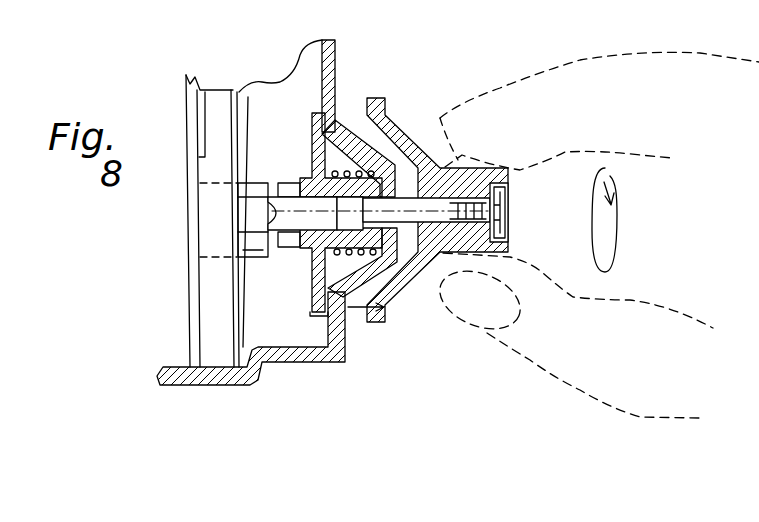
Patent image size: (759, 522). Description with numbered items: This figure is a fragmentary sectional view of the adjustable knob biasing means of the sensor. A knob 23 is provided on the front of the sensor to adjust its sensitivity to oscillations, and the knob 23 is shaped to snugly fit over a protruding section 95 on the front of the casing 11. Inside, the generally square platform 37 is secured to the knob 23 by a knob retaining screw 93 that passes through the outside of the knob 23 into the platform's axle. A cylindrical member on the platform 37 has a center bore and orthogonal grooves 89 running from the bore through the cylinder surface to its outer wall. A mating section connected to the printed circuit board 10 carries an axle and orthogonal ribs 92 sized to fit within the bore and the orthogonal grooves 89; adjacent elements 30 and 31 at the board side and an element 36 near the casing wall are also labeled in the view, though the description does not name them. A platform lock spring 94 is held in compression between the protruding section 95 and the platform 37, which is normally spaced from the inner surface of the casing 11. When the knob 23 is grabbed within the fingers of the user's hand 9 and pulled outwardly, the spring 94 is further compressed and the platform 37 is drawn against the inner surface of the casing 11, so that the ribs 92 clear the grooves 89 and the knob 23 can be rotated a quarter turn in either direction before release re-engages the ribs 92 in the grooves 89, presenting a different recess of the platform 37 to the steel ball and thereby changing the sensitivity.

The hand of operator 9 is at (595, 235).
The printed circuit board 10 is at (234, 92).
The casing 11 is at (306, 360).
The knob 23 is at (408, 118).
The bushing 30 is at (251, 258).
The washer 31 is at (287, 182).
The mounting bar 36 is at (318, 112).
The platform 37 is at (308, 130).
The orthogonal grooves 89 is at (297, 254).
The orthogonal ribs 92 is at (268, 213).
The knob retaining screw 93 is at (510, 190).
The platform lock spring 94 is at (354, 267).
The protruding section 95 is at (340, 127).